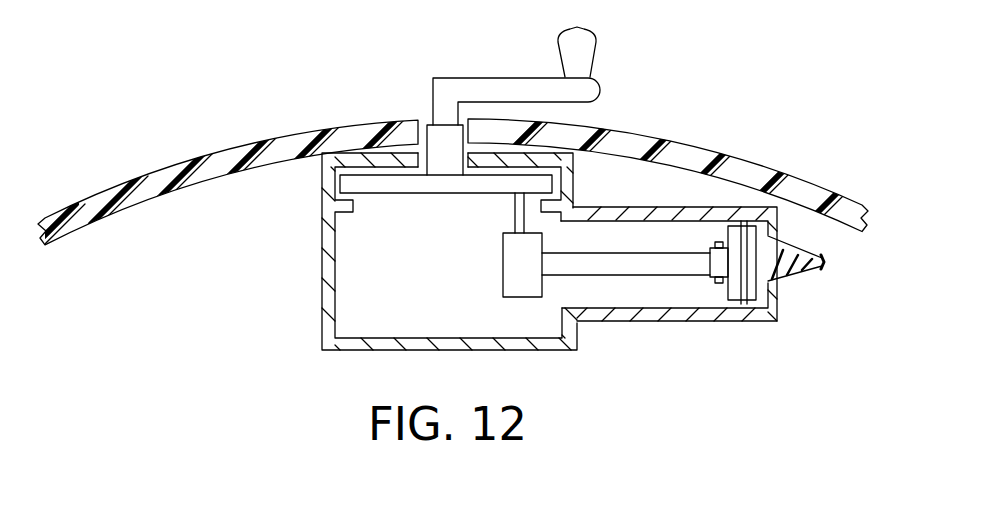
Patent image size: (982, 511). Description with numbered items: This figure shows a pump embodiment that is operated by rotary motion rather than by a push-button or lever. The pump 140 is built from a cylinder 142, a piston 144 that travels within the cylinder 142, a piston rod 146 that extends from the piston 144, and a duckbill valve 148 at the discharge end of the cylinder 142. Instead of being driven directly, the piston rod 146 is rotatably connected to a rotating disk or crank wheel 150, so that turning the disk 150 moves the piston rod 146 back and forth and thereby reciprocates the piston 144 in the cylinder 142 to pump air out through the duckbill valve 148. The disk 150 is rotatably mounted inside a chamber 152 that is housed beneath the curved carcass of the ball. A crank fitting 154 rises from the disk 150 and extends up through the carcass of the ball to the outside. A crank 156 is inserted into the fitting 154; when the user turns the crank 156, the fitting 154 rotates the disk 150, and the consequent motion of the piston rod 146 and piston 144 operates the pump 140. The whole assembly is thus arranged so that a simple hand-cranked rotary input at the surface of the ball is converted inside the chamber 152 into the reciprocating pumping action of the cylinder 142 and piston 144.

The pump 140 is at (645, 348).
The cylinder 142 is at (763, 312).
The piston 144 is at (727, 229).
The piston rod 146 is at (572, 265).
The duckbill valve 148 is at (806, 272).
The rotating disk 150 is at (433, 190).
The chamber 152 is at (324, 253).
The crank fitting 154 is at (435, 137).
The crank 156 is at (488, 87).